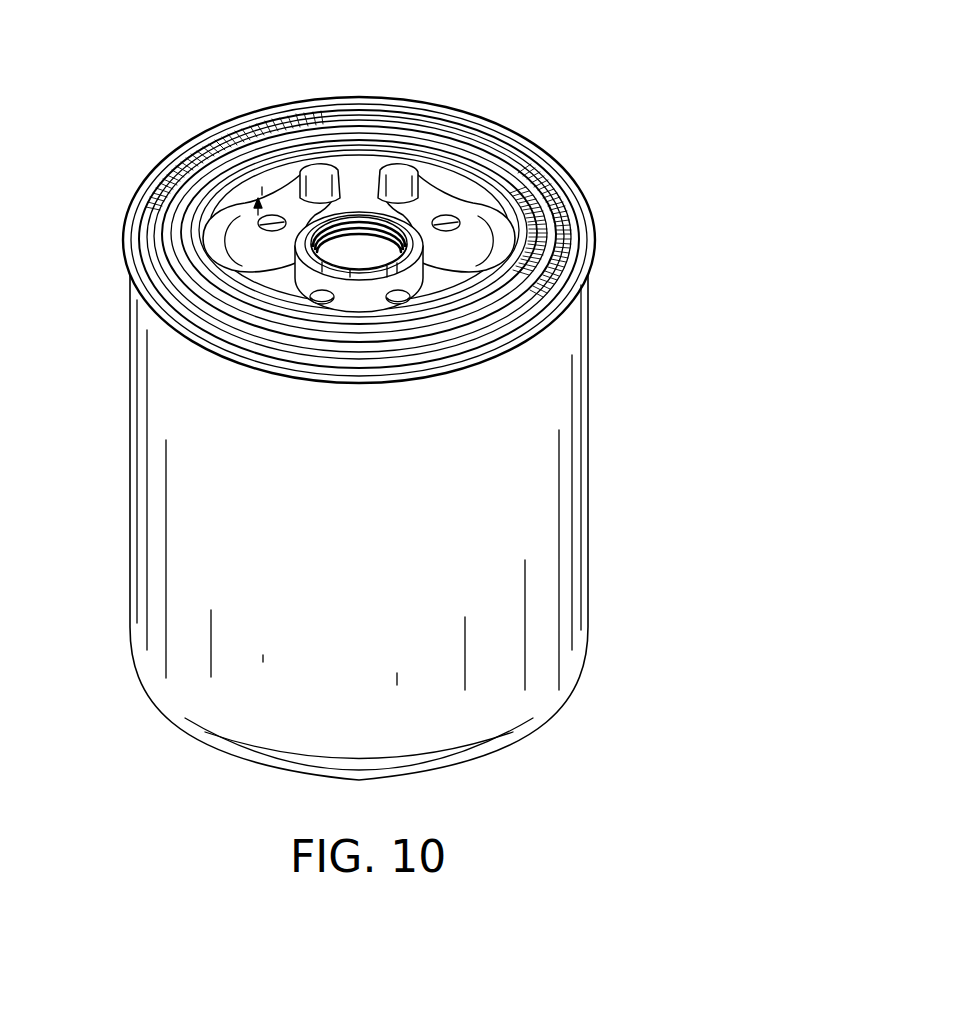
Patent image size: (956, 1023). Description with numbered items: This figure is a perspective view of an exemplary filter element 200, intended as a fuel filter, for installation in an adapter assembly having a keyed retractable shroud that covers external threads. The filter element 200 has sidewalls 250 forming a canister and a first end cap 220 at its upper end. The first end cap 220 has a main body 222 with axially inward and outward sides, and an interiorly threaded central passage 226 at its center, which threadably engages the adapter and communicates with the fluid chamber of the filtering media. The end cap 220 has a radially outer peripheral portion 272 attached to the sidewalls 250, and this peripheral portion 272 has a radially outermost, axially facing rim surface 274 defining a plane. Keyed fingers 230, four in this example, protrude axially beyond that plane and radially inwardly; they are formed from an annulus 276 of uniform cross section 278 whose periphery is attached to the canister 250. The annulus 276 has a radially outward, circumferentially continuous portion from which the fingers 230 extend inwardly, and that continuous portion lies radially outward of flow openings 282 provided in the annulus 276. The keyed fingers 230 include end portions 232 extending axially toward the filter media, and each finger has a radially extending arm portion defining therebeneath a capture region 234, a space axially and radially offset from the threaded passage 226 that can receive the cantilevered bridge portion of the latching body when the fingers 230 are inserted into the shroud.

The filter element 200 is at (385, 396).
The first end cap 220 is at (581, 209).
The main body 222 is at (465, 212).
The interiorly threaded central passage 226 is at (350, 247).
The keyed fingers 230 is at (338, 170).
The end portions 232 is at (360, 212).
The capture region 234 is at (220, 212).
The sidewalls 250 is at (590, 527).
The radially outer peripheral portion 272 is at (584, 228).
The rim surface 274 is at (584, 252).
The annulus 276 is at (250, 258).
The uniform cross section 278 is at (263, 190).
The flow openings 282 is at (340, 185).